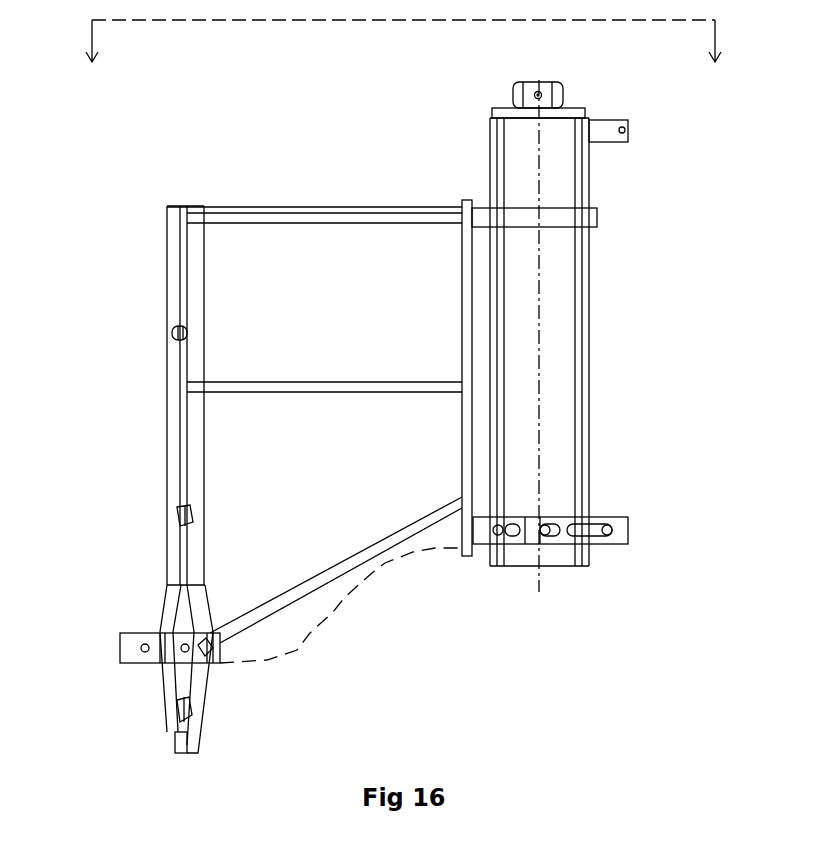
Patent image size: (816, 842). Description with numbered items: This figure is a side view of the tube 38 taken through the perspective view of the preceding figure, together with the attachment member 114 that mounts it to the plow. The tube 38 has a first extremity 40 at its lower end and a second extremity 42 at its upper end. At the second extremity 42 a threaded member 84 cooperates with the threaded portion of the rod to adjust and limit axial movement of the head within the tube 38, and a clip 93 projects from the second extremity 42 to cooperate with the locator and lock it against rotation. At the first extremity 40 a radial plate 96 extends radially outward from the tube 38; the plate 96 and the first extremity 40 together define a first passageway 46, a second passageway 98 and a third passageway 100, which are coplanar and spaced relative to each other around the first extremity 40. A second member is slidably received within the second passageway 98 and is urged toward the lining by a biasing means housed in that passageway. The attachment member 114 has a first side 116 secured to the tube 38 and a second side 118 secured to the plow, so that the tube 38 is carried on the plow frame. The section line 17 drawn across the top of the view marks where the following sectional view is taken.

The section line 17- 17 is at (405, 58).
The tube 38 is at (560, 320).
The first extremity 40 is at (558, 475).
The second extremity 42 is at (560, 142).
The first passageway 46 is at (553, 563).
The threaded member 84 is at (508, 95).
The clip 93 is at (630, 135).
The radial plate 96 is at (620, 550).
The second passageway 98 is at (615, 530).
The third passageway 100 is at (493, 563).
The attachment member 114 is at (357, 451).
The first side 116 is at (463, 455).
The second side 118 is at (180, 398).